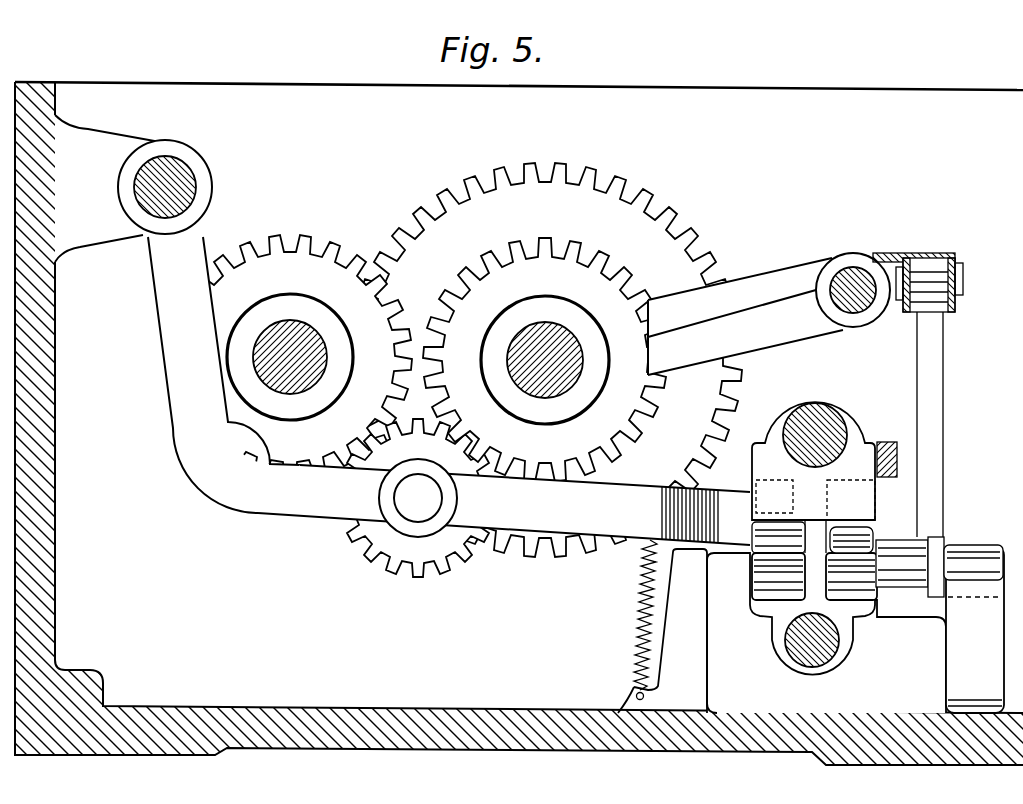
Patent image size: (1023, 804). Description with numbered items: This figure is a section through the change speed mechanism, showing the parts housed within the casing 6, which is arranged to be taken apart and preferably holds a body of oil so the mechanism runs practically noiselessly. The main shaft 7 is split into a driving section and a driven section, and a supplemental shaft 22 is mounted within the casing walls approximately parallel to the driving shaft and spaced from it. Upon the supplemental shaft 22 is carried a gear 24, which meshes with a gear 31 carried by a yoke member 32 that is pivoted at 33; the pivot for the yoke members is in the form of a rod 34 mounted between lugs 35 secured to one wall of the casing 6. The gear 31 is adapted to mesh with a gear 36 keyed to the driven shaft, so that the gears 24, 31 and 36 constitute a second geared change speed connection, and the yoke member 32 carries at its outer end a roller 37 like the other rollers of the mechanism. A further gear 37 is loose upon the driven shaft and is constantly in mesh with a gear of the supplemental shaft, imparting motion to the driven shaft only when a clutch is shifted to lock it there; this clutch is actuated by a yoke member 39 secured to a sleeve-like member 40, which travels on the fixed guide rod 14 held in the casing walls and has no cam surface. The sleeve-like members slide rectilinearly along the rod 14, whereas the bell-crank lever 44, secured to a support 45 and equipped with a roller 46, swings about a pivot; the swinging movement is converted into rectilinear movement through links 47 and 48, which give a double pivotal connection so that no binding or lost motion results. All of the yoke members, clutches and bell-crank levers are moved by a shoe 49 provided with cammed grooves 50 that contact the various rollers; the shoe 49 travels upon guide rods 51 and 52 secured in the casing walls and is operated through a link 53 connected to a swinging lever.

The casing 6 is at (1003, 147).
The shaft 7 is at (575, 375).
The fixed guide rod 14 is at (865, 280).
The supplemental shaft 22 is at (278, 370).
The gear 24 is at (290, 357).
The gear 31 is at (412, 577).
The yoke member 32 is at (504, 502).
The pivot 33 is at (178, 178).
The rod 34 is at (180, 245).
The lugs 35 is at (100, 155).
The gear 36 is at (607, 462).
The gear 37 is at (650, 205).
The yoke member 39 is at (750, 290).
The sleeve-like member 40 is at (895, 275).
The bell-crank lever 44 is at (930, 413).
The support 45 is at (975, 630).
The roller 46 is at (875, 530).
The link 47 is at (905, 311).
The link 48 is at (963, 300).
The shoe 49 is at (860, 505).
The cammed grooves 50 is at (760, 585).
The guide rod 51 is at (828, 425).
The guide rod 52 is at (820, 655).
The link 53 is at (897, 462).